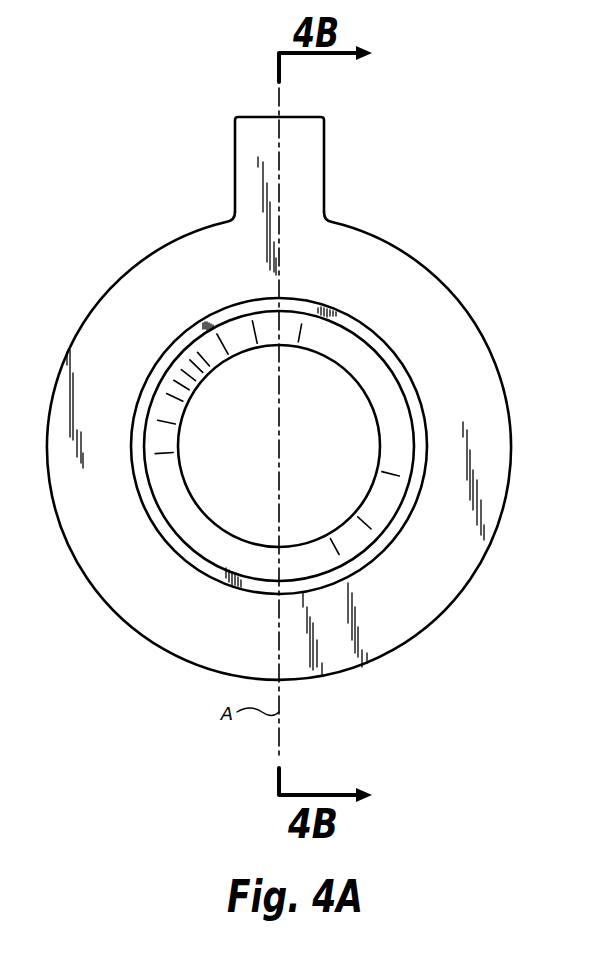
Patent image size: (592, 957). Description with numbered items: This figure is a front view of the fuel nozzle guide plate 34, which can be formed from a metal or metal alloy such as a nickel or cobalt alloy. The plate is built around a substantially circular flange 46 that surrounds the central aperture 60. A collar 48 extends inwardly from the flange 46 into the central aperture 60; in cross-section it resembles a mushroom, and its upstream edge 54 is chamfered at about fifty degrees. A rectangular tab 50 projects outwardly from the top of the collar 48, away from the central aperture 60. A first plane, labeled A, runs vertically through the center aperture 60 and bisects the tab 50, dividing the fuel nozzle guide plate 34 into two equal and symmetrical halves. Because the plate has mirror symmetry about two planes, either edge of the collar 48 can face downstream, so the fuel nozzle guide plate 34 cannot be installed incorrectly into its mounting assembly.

The fuel nozzle guide plate 34 is at (118, 205).
The flange 46 is at (128, 607).
The collar 48 is at (404, 562).
The tab 50 is at (305, 150).
The upstream edge 54 is at (395, 420).
The aperture 60 is at (303, 383).